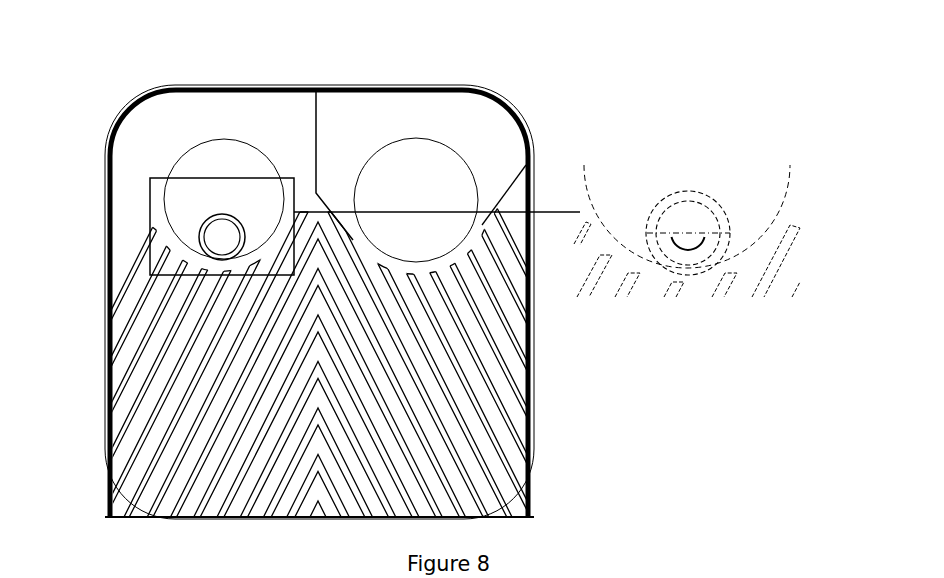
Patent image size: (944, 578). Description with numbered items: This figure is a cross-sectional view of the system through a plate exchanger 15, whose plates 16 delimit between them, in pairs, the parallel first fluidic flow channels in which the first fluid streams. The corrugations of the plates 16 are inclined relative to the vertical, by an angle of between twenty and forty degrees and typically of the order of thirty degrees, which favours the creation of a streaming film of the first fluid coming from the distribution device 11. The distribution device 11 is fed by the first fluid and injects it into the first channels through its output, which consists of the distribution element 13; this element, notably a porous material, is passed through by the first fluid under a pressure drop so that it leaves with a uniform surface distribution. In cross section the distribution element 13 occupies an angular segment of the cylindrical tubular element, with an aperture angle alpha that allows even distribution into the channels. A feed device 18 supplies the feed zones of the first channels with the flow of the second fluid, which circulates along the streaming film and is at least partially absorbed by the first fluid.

The distribution device 11 is at (208, 216).
The distribution element 13 is at (695, 268).
The plate exchanger 15 is at (105, 250).
The plates 16 is at (490, 380).
The feed device 18 is at (213, 161).